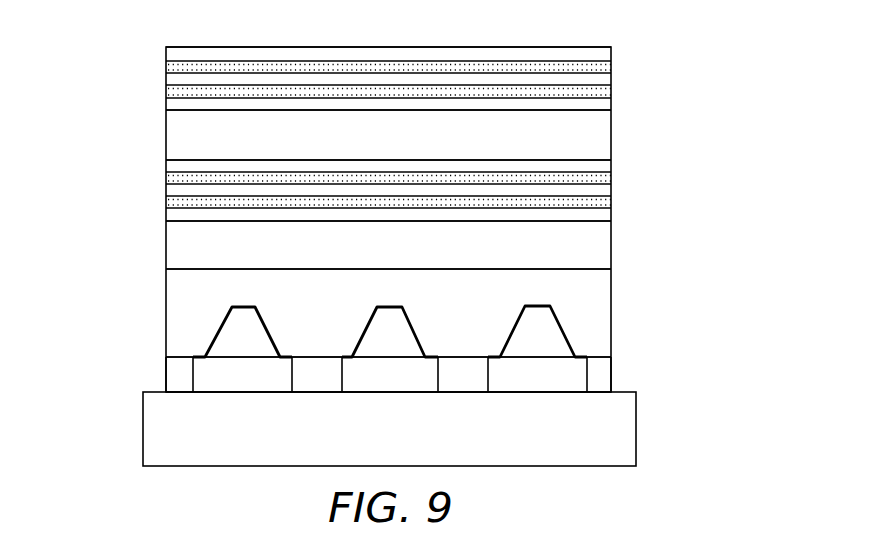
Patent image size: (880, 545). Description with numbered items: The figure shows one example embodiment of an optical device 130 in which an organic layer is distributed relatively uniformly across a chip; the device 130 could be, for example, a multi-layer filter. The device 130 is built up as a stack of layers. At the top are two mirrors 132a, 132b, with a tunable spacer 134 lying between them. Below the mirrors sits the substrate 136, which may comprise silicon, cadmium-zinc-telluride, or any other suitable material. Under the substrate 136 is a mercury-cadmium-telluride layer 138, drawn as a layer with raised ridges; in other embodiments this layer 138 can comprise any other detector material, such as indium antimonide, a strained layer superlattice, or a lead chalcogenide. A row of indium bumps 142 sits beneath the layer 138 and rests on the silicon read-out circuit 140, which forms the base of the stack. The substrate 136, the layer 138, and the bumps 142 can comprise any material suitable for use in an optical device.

The optical device 130 is at (660, 84).
The mirror 132a is at (150, 47).
The mirror 132b is at (151, 161).
The tunable spacer 134 is at (599, 133).
The substrate 136 is at (599, 243).
The mercury-cadmium-telluride layer 138 is at (178, 317).
The silicon read-out circuit 140 is at (413, 440).
The indium bumps 142 is at (178, 378).